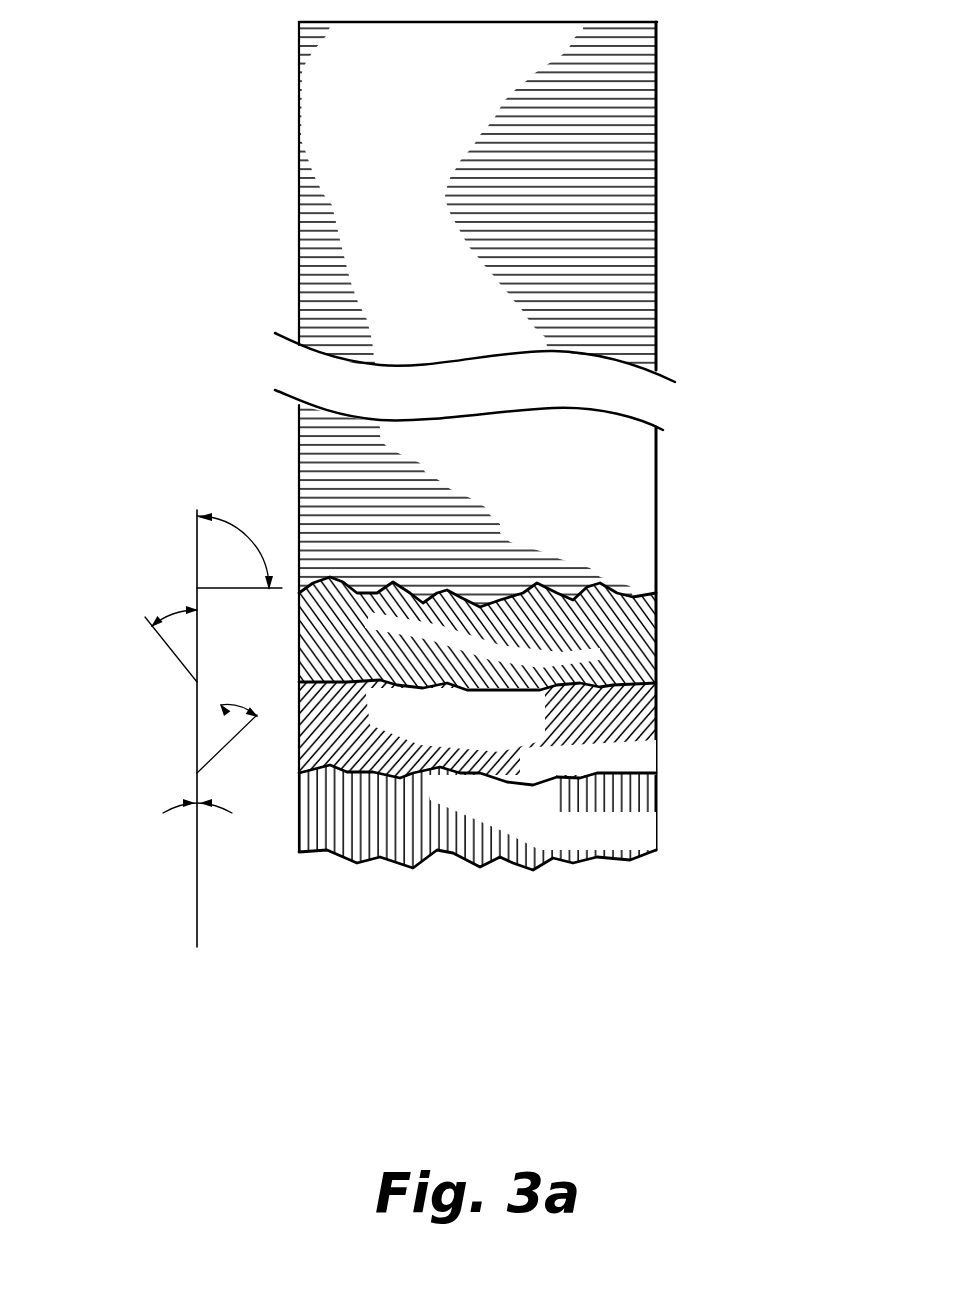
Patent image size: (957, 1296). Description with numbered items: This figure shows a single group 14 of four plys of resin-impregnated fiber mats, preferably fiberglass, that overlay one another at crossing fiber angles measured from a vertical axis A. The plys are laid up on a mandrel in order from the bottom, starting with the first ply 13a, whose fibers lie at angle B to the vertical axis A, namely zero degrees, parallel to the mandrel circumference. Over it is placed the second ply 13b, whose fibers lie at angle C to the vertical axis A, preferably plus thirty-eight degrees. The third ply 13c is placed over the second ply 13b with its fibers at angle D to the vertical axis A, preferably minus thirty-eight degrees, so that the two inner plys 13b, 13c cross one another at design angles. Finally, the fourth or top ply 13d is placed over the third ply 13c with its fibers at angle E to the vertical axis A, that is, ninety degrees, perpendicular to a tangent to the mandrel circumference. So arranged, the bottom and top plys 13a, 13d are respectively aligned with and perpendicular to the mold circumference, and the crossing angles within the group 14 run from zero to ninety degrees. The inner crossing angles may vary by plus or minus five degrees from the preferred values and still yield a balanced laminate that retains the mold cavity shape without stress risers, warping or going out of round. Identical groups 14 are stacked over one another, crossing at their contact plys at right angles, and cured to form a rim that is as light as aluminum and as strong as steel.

The group of plys 14 is at (733, 287).
The first ply 13a is at (638, 828).
The second ply 13b is at (633, 738).
The third ply 13c is at (642, 648).
The fourth ply 13d is at (635, 543).
The vertical axis A is at (197, 915).
The angle B is at (175, 810).
The angle C is at (221, 705).
The angle D is at (168, 648).
The angle E is at (238, 532).